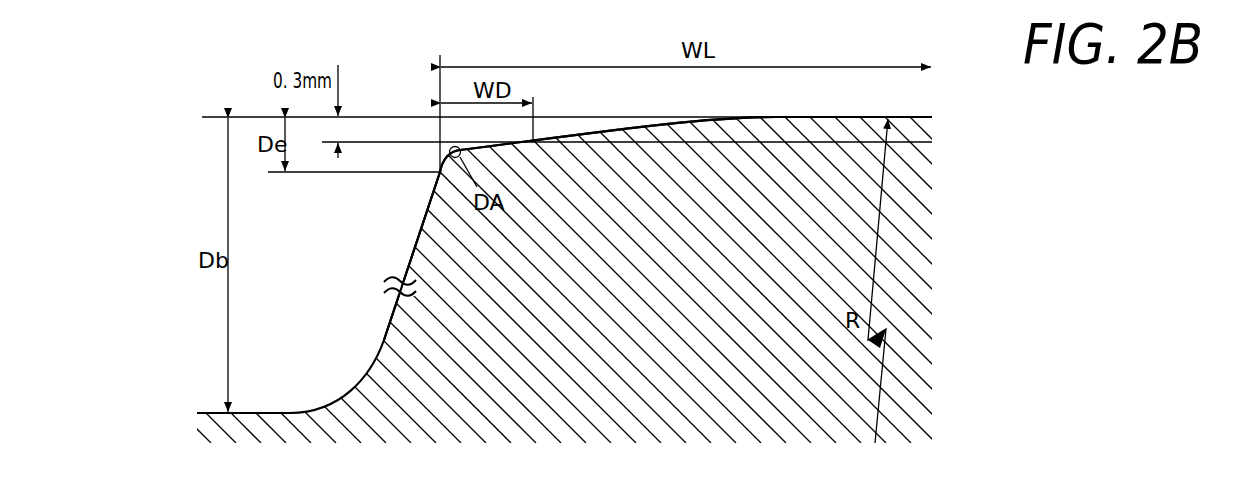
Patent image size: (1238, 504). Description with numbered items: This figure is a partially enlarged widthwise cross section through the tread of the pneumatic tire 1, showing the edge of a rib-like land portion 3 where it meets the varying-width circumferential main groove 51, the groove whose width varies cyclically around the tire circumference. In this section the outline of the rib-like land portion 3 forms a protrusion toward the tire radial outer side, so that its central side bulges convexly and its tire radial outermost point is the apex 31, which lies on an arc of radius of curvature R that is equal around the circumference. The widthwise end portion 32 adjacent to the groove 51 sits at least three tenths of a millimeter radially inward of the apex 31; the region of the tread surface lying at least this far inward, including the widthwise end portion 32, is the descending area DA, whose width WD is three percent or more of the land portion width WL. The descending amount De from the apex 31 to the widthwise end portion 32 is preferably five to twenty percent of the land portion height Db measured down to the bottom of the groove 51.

The pneumatic tire 1 is at (193, 83).
The rib-like land portion 3 is at (789, 100).
The apex 31 is at (890, 117).
The widthwise end portion 32 is at (438, 171).
The varying-width circumferential main groove 51 is at (287, 328).